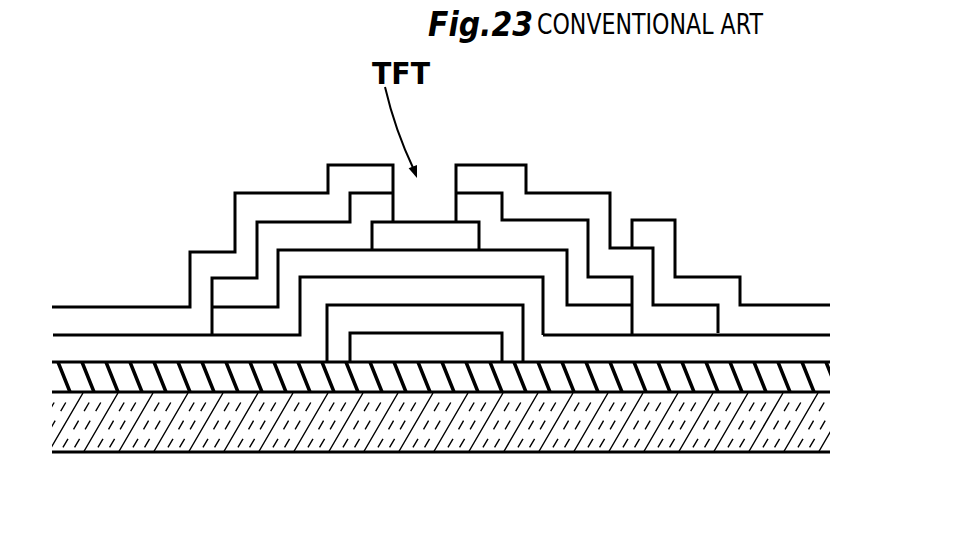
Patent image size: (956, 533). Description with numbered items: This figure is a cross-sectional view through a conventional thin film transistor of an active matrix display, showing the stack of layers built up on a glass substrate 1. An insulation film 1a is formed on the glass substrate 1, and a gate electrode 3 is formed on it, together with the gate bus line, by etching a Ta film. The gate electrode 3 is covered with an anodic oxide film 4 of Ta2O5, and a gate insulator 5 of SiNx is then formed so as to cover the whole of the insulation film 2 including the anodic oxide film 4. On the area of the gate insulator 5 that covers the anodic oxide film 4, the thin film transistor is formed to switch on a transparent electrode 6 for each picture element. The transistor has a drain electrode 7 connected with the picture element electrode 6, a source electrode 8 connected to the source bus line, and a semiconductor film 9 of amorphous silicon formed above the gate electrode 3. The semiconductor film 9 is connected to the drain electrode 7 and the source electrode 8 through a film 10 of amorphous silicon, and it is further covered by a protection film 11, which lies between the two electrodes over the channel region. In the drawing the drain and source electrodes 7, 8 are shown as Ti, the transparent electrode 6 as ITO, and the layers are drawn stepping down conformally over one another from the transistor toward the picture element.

The glass substrate 1 is at (767, 408).
The insulation film 1a is at (647, 377).
The insulation film 2 is at (813, 347).
The gate electrode 3 is at (458, 347).
The anodic oxide film 4 is at (514, 322).
The gate insulator 5 is at (752, 345).
The transparent electrode 6 is at (727, 288).
The drain electrode 7 is at (590, 203).
The source electrode 8 is at (258, 207).
The semiconductor film 9 is at (304, 267).
The film of amorphous silicon 10 is at (372, 203).
The protection film 11 is at (438, 222).